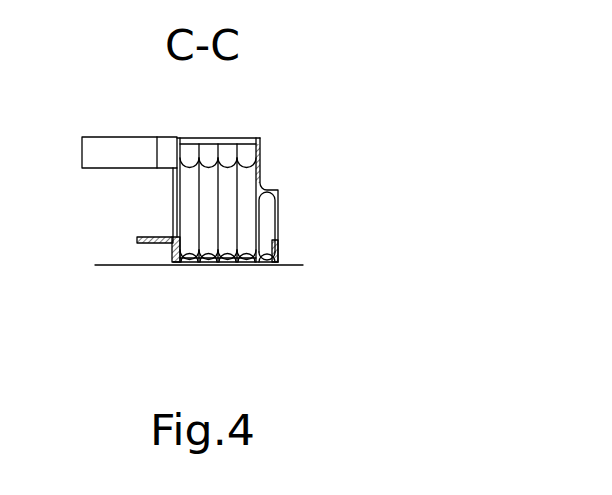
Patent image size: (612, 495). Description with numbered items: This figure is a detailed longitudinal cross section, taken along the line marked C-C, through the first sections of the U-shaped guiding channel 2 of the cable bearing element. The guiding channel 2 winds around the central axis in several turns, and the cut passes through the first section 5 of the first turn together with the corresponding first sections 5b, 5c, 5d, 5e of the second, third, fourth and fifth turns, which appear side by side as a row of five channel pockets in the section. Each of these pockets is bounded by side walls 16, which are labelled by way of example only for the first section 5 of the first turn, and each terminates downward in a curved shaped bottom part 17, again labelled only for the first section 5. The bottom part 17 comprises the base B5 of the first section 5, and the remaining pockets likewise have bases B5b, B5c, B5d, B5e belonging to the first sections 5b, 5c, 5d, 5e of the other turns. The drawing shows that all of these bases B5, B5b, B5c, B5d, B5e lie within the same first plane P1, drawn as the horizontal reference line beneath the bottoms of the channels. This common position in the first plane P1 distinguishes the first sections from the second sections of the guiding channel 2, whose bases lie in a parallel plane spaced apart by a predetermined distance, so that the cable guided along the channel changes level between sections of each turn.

The guiding channel 2 is at (187, 177).
The first section 5 is at (188, 197).
The first section of a second turn 5b is at (205, 188).
The first section of a third turn 5c is at (242, 193).
The first section of a fourth turn 5d is at (260, 184).
The first section of a fifth turn 5e is at (268, 205).
The side walls 16 is at (173, 253).
The curved shaped bottom part 17 is at (178, 266).
The base of the first section B5 is at (188, 266).
The base of the first section of the second turn B5b is at (207, 266).
The base of the first section of the third turn B5c is at (225, 266).
The base of the first section of the fourth turn B5d is at (250, 266).
The base of the first section of the fifth turn B5e is at (277, 266).
The first plane P1 is at (118, 268).